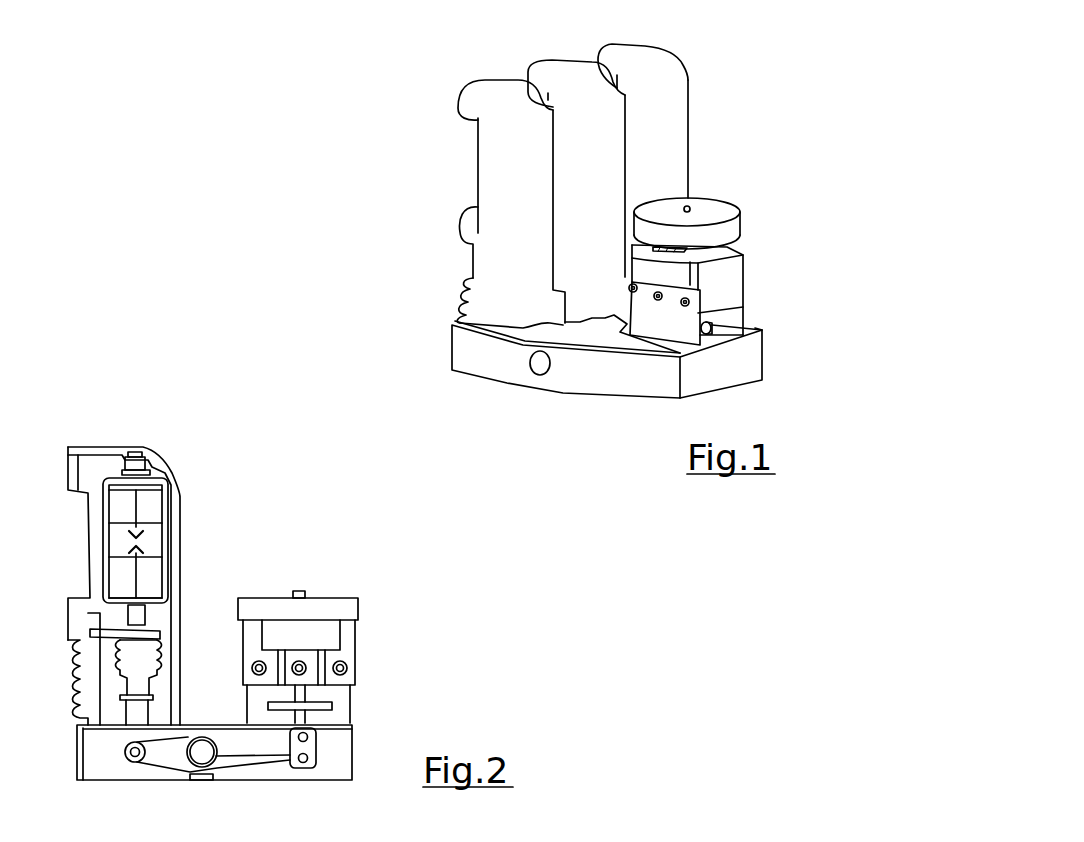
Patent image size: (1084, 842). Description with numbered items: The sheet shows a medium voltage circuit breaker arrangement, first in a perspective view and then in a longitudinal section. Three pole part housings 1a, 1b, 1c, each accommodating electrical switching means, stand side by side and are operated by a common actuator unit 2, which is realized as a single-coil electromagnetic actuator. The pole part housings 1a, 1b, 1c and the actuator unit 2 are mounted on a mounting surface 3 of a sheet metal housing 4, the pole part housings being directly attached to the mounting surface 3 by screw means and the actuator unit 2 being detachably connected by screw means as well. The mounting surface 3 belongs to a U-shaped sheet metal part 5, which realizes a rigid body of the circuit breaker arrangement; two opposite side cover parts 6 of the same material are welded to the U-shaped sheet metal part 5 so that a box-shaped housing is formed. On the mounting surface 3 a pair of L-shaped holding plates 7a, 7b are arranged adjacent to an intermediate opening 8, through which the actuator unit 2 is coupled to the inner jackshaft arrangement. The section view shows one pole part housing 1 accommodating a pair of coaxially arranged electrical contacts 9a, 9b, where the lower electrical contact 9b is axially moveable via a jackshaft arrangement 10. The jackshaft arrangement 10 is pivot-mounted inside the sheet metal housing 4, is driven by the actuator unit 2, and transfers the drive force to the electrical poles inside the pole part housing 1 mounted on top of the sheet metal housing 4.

In FIG. 2, the pole part housing 1 is at (183, 663).
In FIG. 1, the pole part housing 1a is at (483, 97).
In FIG. 1, the pole part housing 1b is at (557, 78).
In FIG. 1, the pole part housing 1c is at (633, 62).
In FIG. 2, the actuator unit 2 is at (274, 582).
In FIG. 1, the mounting surface 3 is at (600, 322).
In FIG. 1, the sheet metal housing 4 is at (440, 360).
In FIG. 2, the sheet metal housing 4 is at (217, 720).
In FIG. 1, the U-shaped sheet metal part 5 is at (597, 350).
In FIG. 1, the side cover part 6 is at (495, 365).
In FIG. 1, the L-shaped holding plate 7a is at (670, 323).
In FIG. 1, the L-shaped holding plate 7b is at (730, 322).
In FIG. 1, the intermediate opening 8 is at (710, 333).
In FIG. 2, the electrical contact 9a is at (140, 510).
In FIG. 2, the electrical contact 9b is at (140, 564).
In FIG. 2, the jackshaft arrangement 10 is at (238, 748).